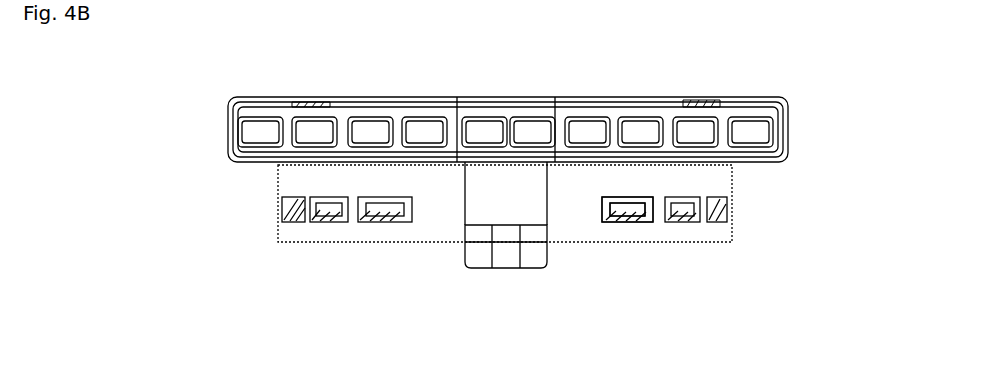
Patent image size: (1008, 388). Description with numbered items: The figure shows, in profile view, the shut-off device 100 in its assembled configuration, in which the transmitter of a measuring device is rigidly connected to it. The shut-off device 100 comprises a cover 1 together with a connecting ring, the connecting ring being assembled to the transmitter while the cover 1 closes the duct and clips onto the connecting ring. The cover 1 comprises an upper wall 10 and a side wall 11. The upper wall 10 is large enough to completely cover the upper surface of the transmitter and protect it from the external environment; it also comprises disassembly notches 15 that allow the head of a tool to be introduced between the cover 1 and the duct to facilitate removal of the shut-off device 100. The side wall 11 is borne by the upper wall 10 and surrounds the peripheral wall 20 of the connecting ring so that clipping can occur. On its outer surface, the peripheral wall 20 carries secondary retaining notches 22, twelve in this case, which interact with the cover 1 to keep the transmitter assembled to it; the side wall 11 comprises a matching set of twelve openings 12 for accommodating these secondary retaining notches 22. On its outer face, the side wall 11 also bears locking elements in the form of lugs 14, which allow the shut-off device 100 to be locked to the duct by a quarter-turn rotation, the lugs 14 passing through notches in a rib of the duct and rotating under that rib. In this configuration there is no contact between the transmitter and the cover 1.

The shut-off device 100 is at (156, 139).
The cover 1 is at (224, 113).
The upper wall 10 is at (772, 110).
The side wall 11 is at (287, 184).
The opening 12 is at (725, 206).
The lug 14 is at (502, 257).
The disassembly notch 15 is at (492, 185).
The peripheral wall 20 is at (652, 210).
The secondary retaining notch 22 is at (631, 210).